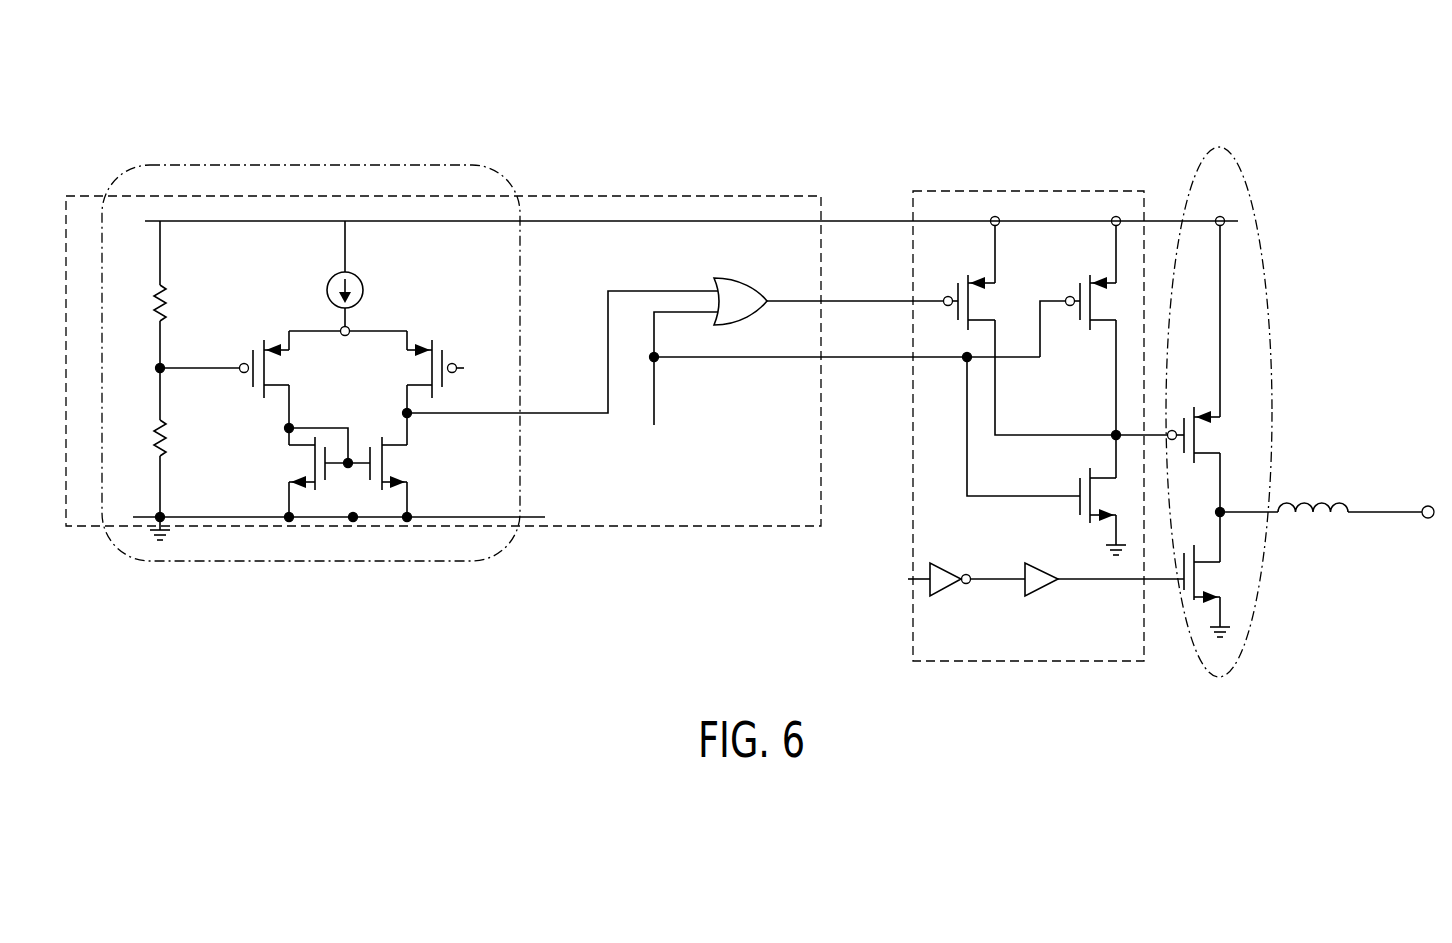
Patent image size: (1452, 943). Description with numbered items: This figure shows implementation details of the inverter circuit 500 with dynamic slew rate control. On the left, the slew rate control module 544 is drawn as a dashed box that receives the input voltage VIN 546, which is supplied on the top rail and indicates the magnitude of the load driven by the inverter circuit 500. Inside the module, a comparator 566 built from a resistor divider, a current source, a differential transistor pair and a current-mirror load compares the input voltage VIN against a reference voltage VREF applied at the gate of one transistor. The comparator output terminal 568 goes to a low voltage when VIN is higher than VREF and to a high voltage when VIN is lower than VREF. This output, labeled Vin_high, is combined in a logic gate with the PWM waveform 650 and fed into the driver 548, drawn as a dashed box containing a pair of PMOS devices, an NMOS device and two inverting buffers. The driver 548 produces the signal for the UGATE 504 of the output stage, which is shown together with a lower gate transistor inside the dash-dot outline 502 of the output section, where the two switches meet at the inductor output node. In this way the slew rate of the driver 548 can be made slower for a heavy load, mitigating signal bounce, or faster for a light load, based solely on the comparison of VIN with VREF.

The inverter circuit 500 is at (216, 86).
The slew rate control module 544 is at (604, 196).
The comparator 566 is at (346, 165).
The output terminal 568 is at (483, 351).
The PWM waveform 650 is at (680, 447).
The driver 548 is at (950, 191).
The input voltage VIN 546 is at (1290, 228).
The UGATE 504 is at (1292, 440).
The output stage / lower gate transistor (LGATE) 502 is at (1206, 150).